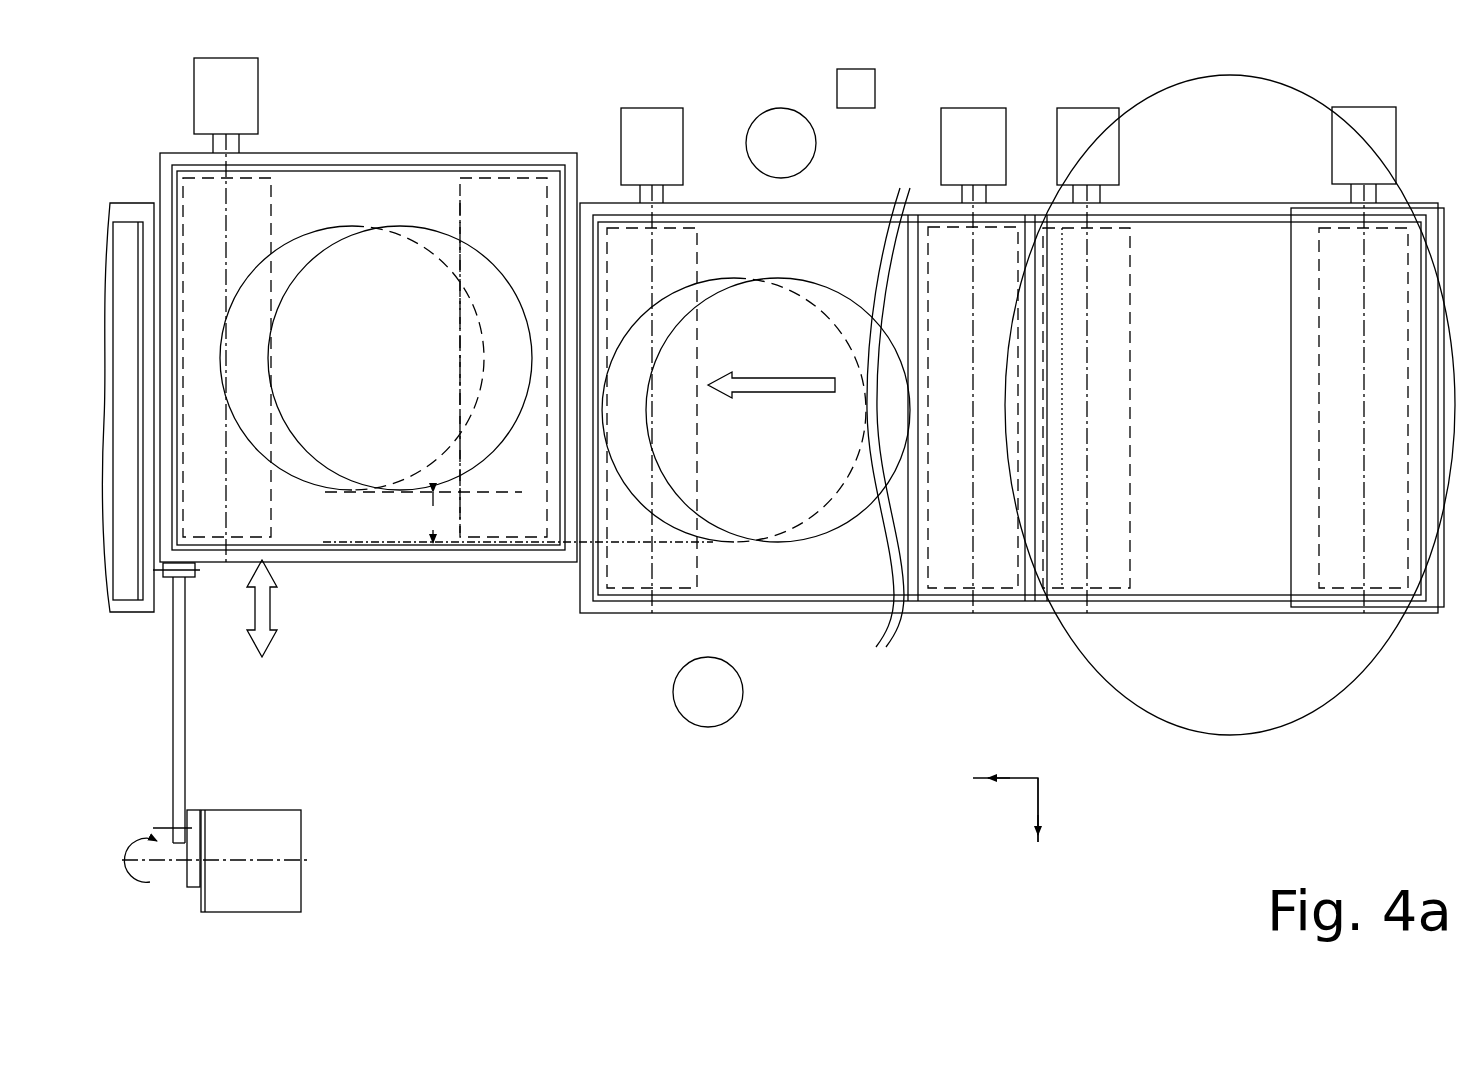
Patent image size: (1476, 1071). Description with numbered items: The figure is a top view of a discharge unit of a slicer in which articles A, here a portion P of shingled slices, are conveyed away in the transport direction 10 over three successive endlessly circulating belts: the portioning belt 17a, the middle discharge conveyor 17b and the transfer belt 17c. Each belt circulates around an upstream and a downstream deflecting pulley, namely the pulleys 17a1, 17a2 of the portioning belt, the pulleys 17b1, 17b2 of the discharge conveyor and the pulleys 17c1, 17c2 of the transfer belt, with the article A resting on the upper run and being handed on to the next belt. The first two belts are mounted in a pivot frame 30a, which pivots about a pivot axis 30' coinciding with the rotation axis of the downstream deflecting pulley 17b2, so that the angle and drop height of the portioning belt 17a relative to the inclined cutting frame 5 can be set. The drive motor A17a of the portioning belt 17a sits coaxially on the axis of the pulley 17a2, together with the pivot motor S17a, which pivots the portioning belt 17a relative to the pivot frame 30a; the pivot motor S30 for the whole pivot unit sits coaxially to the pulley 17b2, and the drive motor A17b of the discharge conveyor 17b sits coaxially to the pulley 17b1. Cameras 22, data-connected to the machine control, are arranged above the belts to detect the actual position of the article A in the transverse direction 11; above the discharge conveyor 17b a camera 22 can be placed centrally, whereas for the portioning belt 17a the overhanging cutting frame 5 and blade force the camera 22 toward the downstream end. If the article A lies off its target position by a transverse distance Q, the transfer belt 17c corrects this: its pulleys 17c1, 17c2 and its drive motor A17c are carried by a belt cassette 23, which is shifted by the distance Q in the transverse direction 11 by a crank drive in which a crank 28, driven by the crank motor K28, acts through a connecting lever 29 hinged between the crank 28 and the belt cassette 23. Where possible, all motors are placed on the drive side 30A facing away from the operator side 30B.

The belt cassette 23 is at (477, 162).
The transfer belt 17c is at (303, 172).
The upstream deflecting pulley of transfer belt 17c1 is at (460, 203).
The downstream deflecting pulley of transfer belt 17c2 is at (270, 507).
The article A is at (484, 243).
The transverse distance Q is at (432, 517).
The drive motor of transfer belt A17c is at (226, 105).
The connecting lever 29 is at (182, 690).
The crank 28 is at (193, 817).
The crank motor K28 is at (251, 861).
The pivot frame 30a is at (1222, 203).
The camera 22 is at (916, 408).
The discharge conveyor 17b is at (740, 223).
The pivot axis 30' is at (734, 410).
The portion P is at (818, 286).
The downstream deflecting pulley of discharge conveyor 17b2 is at (697, 310).
The upstream deflecting pulley of discharge conveyor 17b1 is at (928, 317).
The transport direction 10 is at (783, 387).
The transverse direction 11 is at (1040, 802).
The portioning belt 17a is at (1187, 225).
The downstream deflecting pulley of portioning belt 17a2 is at (1132, 533).
The upstream deflecting pulley of portioning belt 17a1 is at (1319, 482).
The cutting frame 5 is at (1290, 358).
The pivot motor of pivot unit S30 is at (652, 155).
The drive motor of discharge conveyor A17b is at (973, 155).
The pivot motor of portioning belt S17a is at (1088, 155).
The drive motor of portioning belt A17a is at (1364, 155).
The drive side 30A is at (781, 143).
The operator side 30B is at (708, 692).